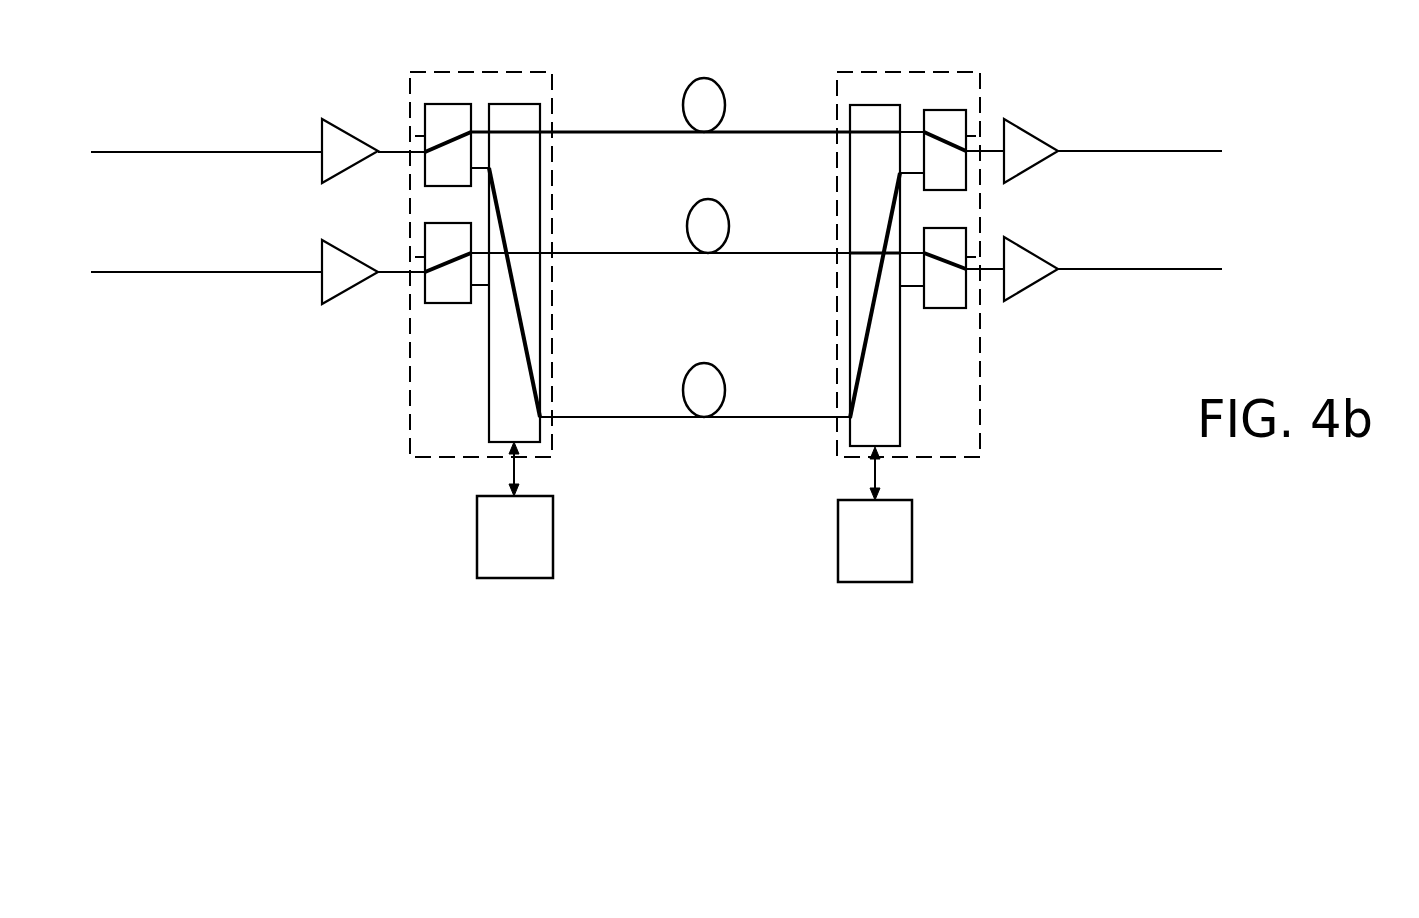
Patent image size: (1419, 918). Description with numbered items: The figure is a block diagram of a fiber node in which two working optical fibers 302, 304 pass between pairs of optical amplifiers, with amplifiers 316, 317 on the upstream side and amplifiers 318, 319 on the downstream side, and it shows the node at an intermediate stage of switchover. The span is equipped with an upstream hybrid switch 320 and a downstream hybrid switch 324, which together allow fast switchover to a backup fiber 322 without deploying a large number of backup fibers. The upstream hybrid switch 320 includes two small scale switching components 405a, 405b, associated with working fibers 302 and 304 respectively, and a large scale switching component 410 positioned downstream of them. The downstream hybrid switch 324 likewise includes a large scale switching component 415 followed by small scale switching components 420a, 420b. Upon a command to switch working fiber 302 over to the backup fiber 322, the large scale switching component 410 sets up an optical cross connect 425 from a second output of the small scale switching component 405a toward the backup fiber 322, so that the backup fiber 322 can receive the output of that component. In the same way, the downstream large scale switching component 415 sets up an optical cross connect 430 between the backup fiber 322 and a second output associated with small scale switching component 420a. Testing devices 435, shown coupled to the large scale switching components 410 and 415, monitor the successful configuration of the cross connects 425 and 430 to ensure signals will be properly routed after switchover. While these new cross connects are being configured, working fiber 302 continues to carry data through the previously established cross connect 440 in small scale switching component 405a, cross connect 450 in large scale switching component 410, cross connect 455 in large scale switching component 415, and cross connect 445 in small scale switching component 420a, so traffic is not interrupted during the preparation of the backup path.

The optical fiber 302 is at (652, 133).
The optical fiber 304 is at (810, 254).
The optical amplifier 316 is at (337, 122).
The optical amplifier 317 is at (337, 242).
The optical amplifier 318 is at (1027, 132).
The optical amplifier 319 is at (1017, 257).
The upstream hybrid switch 320 is at (430, 83).
The backup fiber 322 is at (655, 417).
The downstream hybrid switch 324 is at (950, 450).
The small scale switching component 405a is at (442, 117).
The small scale switching component 405b is at (440, 293).
The large scale switching component 410 is at (502, 397).
The large scale switching component 415 is at (885, 435).
The small scale switching component 420a is at (947, 120).
The small scale switching component 420b is at (938, 300).
The optical cross connect 425 is at (523, 327).
The optical cross connect 430 is at (868, 318).
The testing device 435 is at (538, 552).
The cross connect 440 is at (438, 142).
The cross connect 445 is at (932, 135).
The cross connect 450 is at (517, 132).
The cross connect 455 is at (863, 133).